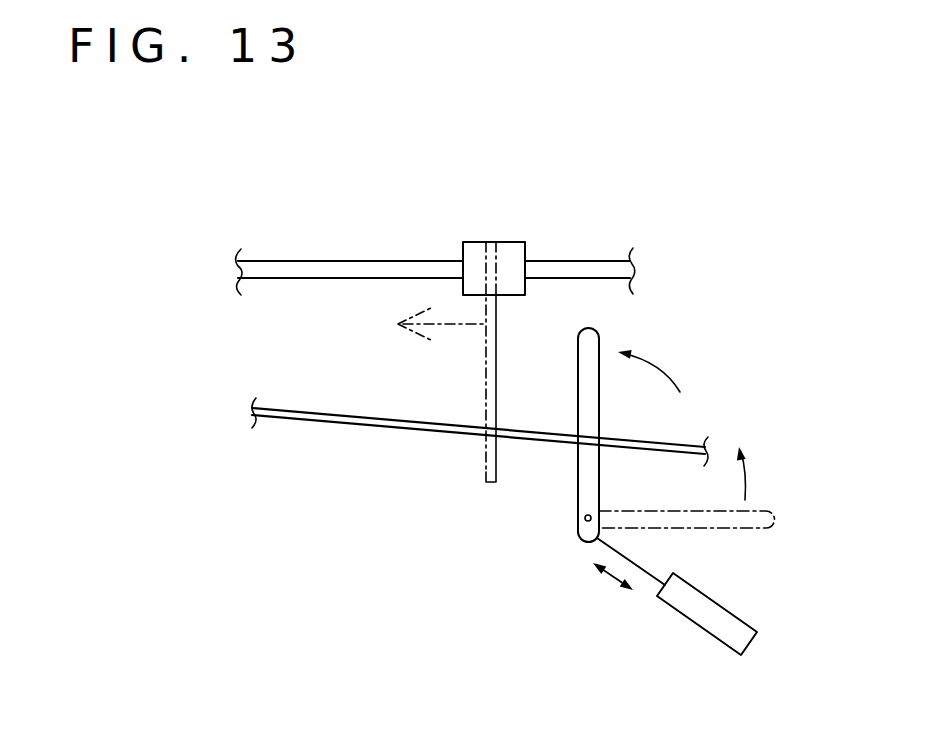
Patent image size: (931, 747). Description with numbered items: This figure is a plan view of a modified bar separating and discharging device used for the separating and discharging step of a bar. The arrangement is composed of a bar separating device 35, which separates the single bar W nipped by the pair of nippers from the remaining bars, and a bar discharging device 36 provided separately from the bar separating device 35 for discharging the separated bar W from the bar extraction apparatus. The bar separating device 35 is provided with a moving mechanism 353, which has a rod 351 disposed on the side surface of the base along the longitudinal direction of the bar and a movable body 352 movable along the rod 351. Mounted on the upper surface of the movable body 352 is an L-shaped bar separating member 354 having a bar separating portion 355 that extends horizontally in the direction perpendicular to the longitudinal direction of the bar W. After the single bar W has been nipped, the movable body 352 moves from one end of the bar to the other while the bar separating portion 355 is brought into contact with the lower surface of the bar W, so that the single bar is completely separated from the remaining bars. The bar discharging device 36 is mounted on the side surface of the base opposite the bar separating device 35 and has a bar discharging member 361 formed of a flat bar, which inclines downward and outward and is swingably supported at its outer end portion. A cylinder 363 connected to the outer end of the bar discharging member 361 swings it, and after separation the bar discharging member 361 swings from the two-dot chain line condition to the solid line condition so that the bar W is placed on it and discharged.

The bar separating device 35 is at (416, 236).
The rod 351 is at (563, 262).
The movable body 352 is at (524, 243).
The moving mechanism 353 is at (689, 180).
The L-shaped bar separating member 354 is at (497, 300).
The bar separating portion 355 is at (484, 370).
The bar W is at (312, 413).
The bar discharging device 36 is at (581, 552).
The bar discharging member 361 is at (592, 478).
The cylinder 363 is at (700, 598).